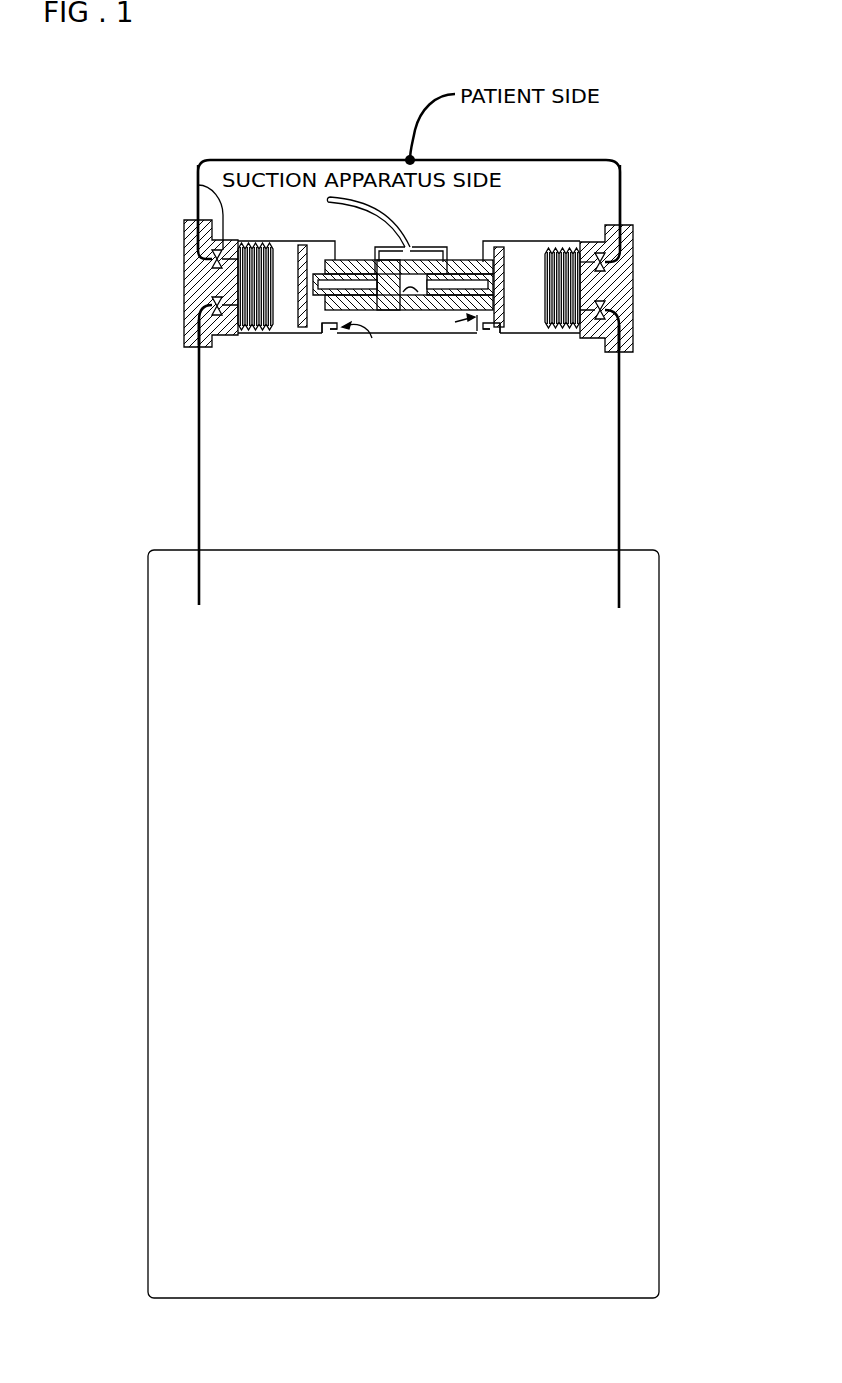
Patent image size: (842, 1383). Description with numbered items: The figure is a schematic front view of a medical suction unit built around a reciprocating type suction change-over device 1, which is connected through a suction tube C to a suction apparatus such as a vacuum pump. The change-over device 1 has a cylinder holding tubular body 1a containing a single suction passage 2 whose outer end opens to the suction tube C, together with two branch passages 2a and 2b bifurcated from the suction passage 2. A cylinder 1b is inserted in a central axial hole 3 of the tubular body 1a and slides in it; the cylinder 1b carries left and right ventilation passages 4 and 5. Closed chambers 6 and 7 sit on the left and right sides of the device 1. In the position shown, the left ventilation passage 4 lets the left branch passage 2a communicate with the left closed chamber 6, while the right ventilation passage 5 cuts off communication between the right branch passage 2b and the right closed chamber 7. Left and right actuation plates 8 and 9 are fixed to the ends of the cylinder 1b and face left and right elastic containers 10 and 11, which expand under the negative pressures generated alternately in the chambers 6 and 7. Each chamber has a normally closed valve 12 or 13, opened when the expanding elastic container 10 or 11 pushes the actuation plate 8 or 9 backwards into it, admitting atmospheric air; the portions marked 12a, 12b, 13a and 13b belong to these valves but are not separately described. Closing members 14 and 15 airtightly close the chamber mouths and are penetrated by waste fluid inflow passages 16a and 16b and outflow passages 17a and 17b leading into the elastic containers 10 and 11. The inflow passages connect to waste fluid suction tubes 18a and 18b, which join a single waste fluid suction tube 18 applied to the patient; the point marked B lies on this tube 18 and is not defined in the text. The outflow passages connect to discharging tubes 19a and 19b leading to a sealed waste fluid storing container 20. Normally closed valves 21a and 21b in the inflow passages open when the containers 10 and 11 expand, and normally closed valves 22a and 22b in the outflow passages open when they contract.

The reciprocating type suction change-over device 1 is at (416, 329).
The cylinder holding tubular body 1a is at (470, 262).
The cylinder 1b is at (403, 312).
The suction passage 2 is at (410, 238).
The left branch passage 2a is at (373, 255).
The right branch passage 2b is at (447, 250).
The central axial hole 3 is at (412, 305).
The left ventilation passage 4 is at (361, 337).
The right ventilation passage 5 is at (460, 329).
The left closed chamber 6 is at (284, 245).
The right closed chamber 7 is at (530, 255).
The left actuation plate 8 is at (303, 328).
The right actuation plate 9 is at (502, 310).
The left elastic container 10 is at (256, 333).
The right elastic container 11 is at (562, 250).
The left normally closed type valve 12 is at (360, 340).
The outlet port wall 12a is at (315, 335).
The outlet port lip 12b is at (332, 335).
The right normally closed type valve 13 is at (474, 335).
The outlet port wall 13a is at (487, 333).
The outlet port lip 13b is at (492, 338).
The left closing member 14 is at (185, 280).
The right closing member 15 is at (625, 300).
The left waste fluid inflow passage 16a is at (187, 243).
The right waste fluid inflow passage 16b is at (633, 232).
The left waste fluid outflow passage 17a is at (187, 325).
The right waste fluid outflow passage 17b is at (620, 330).
The single waste fluid suction tube 18 is at (417, 130).
The left waste fluid suction tube 18a is at (228, 160).
The right waste fluid suction tube 18b is at (605, 160).
The left waste fluid discharging tube 19a is at (197, 495).
The right waste fluid discharging tube 19b is at (620, 492).
The sealed waste fluid storing container 20 is at (645, 825).
The left normally closed type valve 21a is at (196, 181).
The right normally closed type valve 21b is at (603, 268).
The left normally closed type valve 22a is at (220, 318).
The right normally closed type valve 22b is at (594, 338).
The branch point B is at (442, 97).
The suction tube C is at (347, 214).